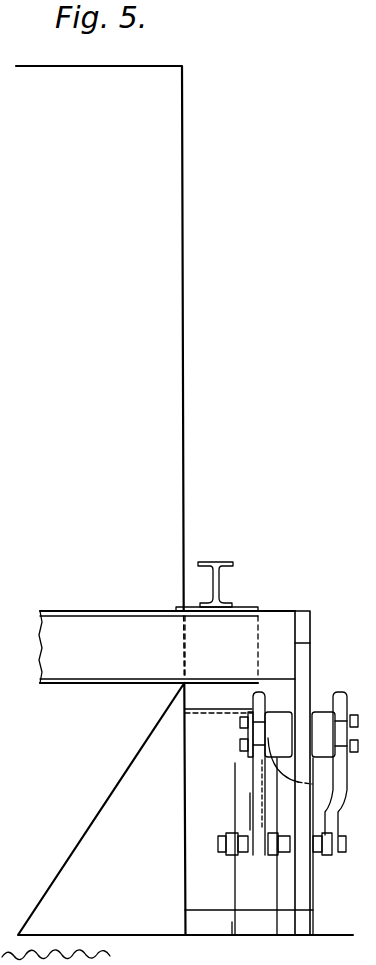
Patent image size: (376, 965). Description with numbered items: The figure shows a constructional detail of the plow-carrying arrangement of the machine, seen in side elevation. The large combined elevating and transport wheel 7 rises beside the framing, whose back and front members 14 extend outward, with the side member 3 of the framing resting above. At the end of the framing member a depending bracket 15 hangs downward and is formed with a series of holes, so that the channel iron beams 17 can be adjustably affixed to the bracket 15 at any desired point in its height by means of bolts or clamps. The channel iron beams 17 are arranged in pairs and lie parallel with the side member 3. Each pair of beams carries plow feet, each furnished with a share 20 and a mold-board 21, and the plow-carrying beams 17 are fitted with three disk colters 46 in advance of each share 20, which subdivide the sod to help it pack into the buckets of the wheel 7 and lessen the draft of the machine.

The combined elevating and transport wheel 7 is at (101, 500).
The back and front members 14 is at (167, 647).
The side members 3 is at (221, 582).
The depending bracket 15 is at (306, 690).
The channel iron beams 17 is at (284, 713).
The mold-board 21 is at (218, 746).
The disk colters 46 is at (313, 882).
The share 20 is at (232, 922).